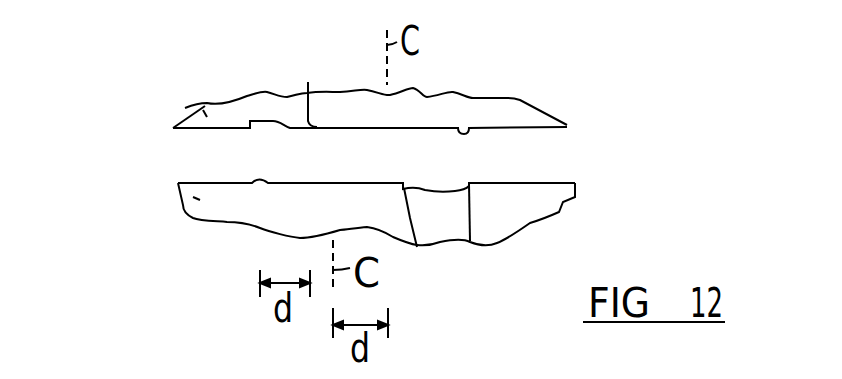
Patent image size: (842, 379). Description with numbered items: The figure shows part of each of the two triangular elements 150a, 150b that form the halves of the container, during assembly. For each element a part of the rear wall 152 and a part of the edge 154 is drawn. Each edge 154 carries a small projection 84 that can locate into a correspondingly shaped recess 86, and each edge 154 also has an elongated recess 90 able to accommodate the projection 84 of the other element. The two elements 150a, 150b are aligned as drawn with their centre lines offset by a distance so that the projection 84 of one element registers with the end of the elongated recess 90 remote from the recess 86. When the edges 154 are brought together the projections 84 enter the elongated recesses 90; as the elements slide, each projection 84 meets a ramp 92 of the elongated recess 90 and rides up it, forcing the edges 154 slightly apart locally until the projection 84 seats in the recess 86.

The triangular element 150a is at (520, 99).
The triangular element 150b is at (563, 212).
The rear wall 152 is at (197, 106).
The edge 154 is at (565, 127).
The projection 84 is at (462, 128).
The recess 86 is at (308, 82).
The elongated recess 90 is at (250, 120).
The ramp 92 is at (290, 126).